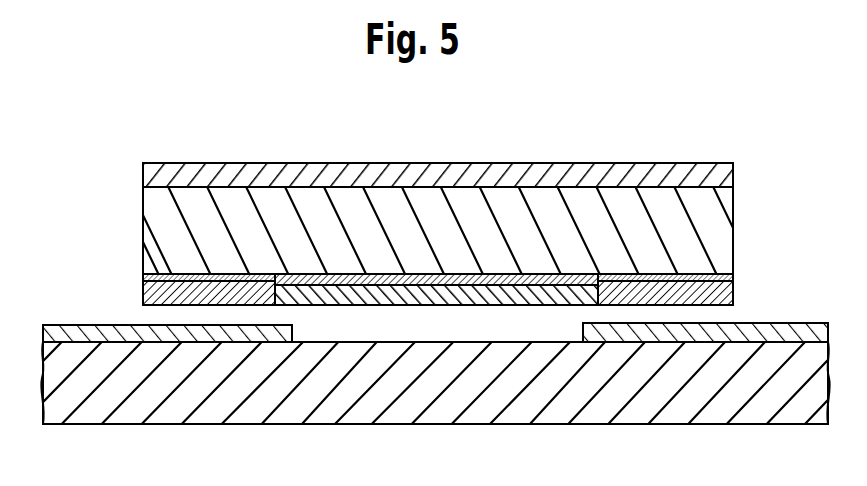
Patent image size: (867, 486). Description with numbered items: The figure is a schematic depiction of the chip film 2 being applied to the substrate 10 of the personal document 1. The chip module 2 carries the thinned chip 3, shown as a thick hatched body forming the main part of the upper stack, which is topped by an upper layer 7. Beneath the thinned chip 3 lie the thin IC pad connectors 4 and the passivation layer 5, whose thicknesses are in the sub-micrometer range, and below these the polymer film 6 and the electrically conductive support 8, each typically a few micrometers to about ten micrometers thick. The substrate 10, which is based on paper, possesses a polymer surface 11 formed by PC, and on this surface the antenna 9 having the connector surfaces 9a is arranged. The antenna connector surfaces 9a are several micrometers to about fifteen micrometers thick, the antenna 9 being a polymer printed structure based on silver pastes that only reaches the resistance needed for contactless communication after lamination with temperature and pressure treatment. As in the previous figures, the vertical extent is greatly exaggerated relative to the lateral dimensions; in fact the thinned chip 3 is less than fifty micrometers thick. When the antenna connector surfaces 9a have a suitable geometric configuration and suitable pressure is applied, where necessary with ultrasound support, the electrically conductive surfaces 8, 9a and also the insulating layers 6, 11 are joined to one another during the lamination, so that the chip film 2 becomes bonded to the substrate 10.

The personal document 1 is at (676, 127).
The chip film 2 is at (136, 163).
The thinned chip 3 is at (718, 207).
The IC pad connectors 4 is at (733, 274).
The passivation layer 5 is at (423, 277).
The polymer film 6 is at (487, 303).
The top cover layer 7 is at (733, 167).
The electrically conductive support 8 is at (733, 297).
The antenna 9 is at (48, 330).
The antenna connector surfaces 9a is at (265, 343).
The substrate 10 is at (433, 402).
The polymer surface 11 is at (388, 336).